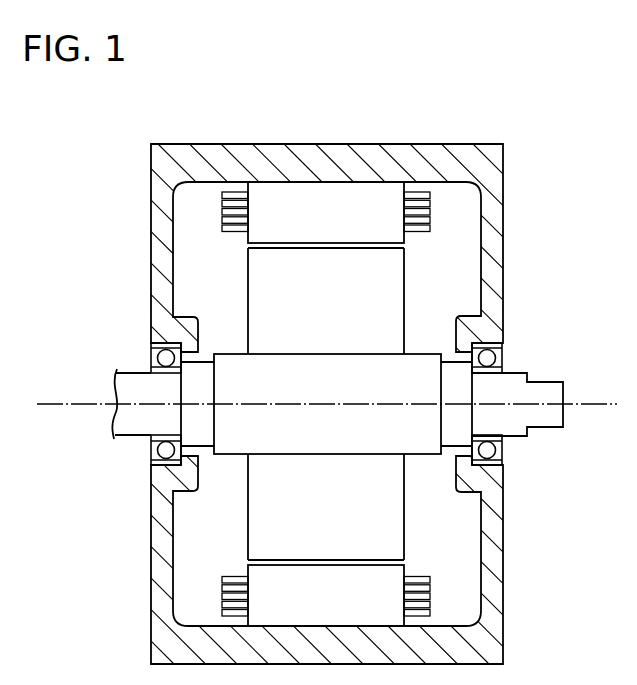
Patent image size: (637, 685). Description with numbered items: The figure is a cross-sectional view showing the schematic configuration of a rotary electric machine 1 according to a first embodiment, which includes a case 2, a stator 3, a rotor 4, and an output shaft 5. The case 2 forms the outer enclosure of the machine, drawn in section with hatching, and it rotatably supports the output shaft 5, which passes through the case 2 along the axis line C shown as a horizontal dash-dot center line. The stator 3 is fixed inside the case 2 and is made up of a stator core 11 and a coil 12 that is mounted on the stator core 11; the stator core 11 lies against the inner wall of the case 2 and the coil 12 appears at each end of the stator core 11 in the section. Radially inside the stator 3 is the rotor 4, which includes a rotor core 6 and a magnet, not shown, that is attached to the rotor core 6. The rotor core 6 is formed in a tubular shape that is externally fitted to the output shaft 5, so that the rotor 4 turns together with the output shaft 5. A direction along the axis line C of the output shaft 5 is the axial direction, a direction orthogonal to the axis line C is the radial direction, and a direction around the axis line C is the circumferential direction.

The rotary electric machine 1 is at (505, 130).
The case 2 is at (150, 186).
The stator 3 is at (571, 157).
The stator core 11 is at (387, 192).
The coil 12 is at (430, 222).
The rotor 4 is at (393, 542).
The rotor core 6 is at (326, 404).
The output shaft 5 is at (130, 433).
The axis line C is at (55, 403).